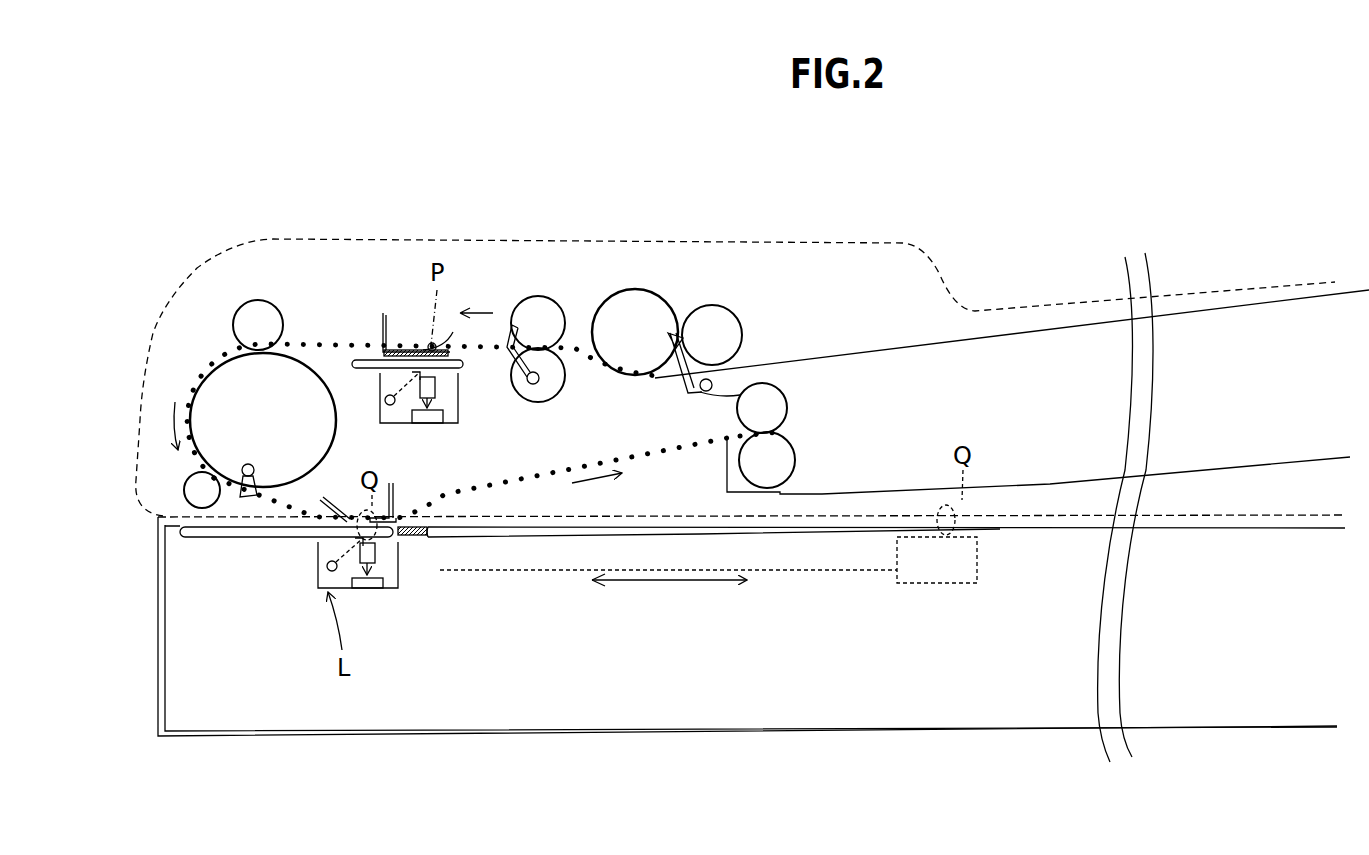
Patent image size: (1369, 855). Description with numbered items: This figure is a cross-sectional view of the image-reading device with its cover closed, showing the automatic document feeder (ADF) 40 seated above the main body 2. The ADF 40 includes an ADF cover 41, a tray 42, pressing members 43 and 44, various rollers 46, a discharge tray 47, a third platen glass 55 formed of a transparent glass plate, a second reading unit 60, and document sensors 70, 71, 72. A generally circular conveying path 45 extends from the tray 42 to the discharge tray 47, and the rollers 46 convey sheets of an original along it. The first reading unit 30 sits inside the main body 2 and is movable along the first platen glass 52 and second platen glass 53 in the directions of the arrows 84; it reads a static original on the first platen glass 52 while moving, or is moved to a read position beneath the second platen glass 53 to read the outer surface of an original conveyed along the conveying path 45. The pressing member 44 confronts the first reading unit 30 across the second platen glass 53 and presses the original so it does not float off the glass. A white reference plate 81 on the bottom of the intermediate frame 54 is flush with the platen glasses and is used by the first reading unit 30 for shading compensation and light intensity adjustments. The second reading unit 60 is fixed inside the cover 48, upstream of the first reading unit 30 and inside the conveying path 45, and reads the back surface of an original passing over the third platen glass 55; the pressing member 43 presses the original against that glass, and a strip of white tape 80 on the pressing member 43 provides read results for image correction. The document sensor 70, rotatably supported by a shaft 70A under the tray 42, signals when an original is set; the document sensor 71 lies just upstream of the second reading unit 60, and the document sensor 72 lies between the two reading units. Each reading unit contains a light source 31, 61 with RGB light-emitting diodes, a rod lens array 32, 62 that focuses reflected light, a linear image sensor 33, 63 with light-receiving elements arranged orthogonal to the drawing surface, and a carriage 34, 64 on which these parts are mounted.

The main body 2 is at (157, 603).
The first reading unit 30 is at (398, 575).
The light source 31 is at (327, 566).
The rod lens array 32 is at (375, 553).
The linear image sensor 33 is at (377, 587).
The carriage 34 is at (317, 583).
The automatic document feeder (ADF) 40 is at (968, 155).
The ADF cover 41 is at (882, 242).
The tray 42 is at (1250, 300).
The pressing member 43 is at (383, 330).
The pressing member 44 is at (392, 500).
The conveying path 45 is at (307, 350).
The rollers 46 is at (245, 328).
The discharge tray 47 is at (1240, 465).
The cover 48 is at (222, 240).
The first platen glass 52 is at (568, 528).
The second platen glass 53 is at (212, 533).
The intermediate frame 54 is at (398, 532).
The third platen glass 55 is at (455, 330).
The second reading unit 60 is at (458, 405).
The light source 61 is at (385, 400).
The rod lens array 62 is at (435, 390).
The linear image sensor 63 is at (438, 417).
The carriage 64 is at (378, 398).
The document sensor 70 is at (715, 395).
The shaft 70A is at (710, 383).
The document sensor 71 is at (518, 392).
The document sensor 72 is at (254, 474).
The white tape 80 is at (406, 350).
The white reference plate 81 is at (430, 532).
The arrows 84 is at (667, 580).